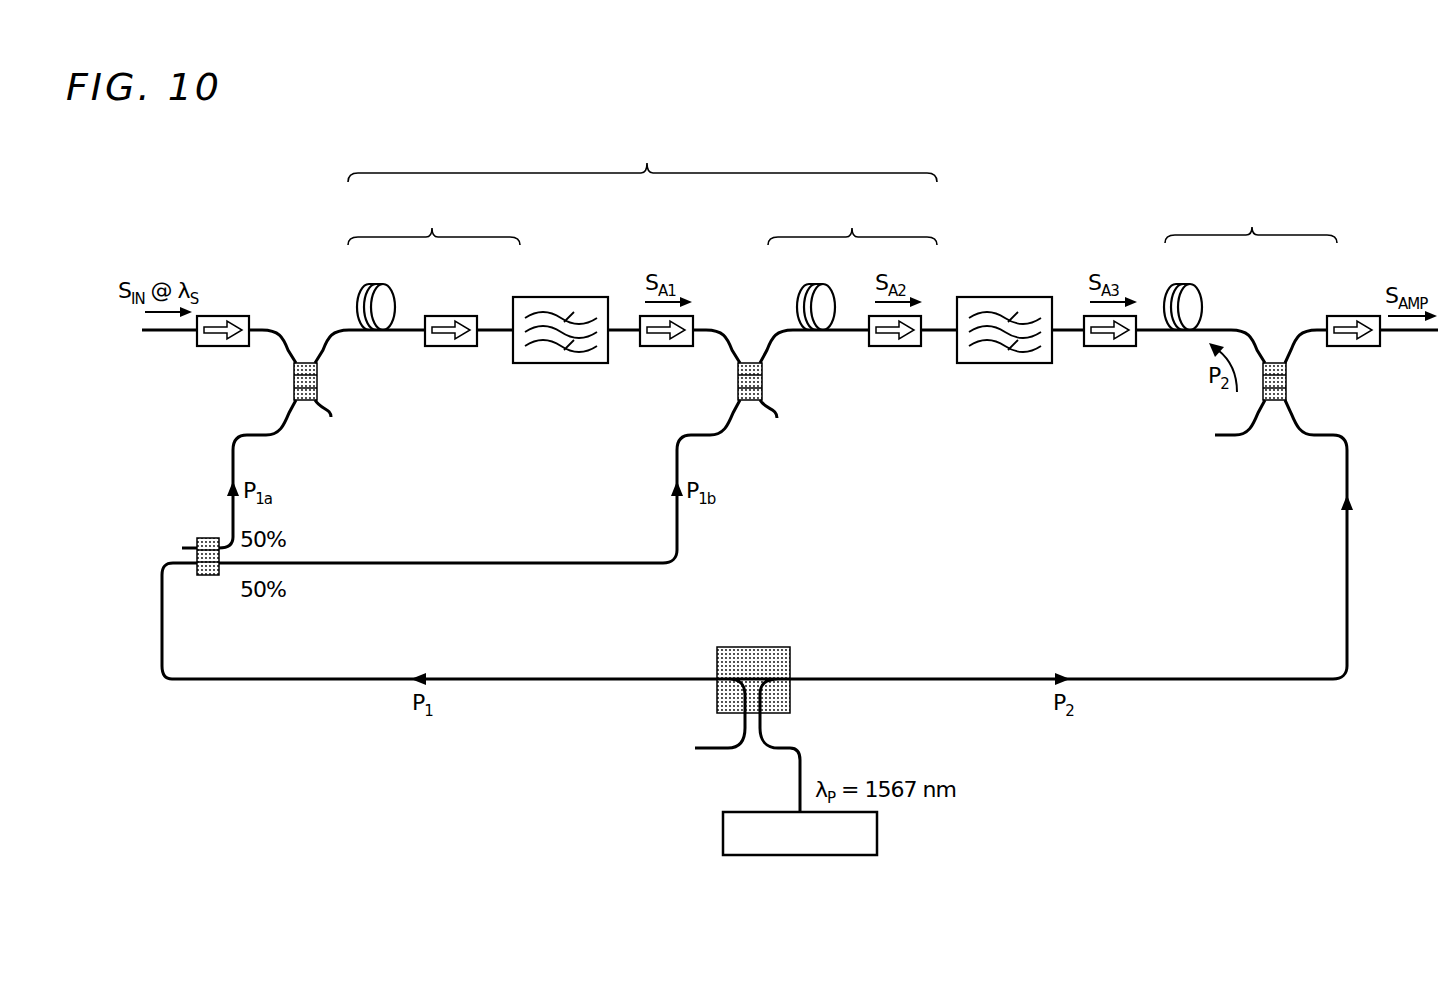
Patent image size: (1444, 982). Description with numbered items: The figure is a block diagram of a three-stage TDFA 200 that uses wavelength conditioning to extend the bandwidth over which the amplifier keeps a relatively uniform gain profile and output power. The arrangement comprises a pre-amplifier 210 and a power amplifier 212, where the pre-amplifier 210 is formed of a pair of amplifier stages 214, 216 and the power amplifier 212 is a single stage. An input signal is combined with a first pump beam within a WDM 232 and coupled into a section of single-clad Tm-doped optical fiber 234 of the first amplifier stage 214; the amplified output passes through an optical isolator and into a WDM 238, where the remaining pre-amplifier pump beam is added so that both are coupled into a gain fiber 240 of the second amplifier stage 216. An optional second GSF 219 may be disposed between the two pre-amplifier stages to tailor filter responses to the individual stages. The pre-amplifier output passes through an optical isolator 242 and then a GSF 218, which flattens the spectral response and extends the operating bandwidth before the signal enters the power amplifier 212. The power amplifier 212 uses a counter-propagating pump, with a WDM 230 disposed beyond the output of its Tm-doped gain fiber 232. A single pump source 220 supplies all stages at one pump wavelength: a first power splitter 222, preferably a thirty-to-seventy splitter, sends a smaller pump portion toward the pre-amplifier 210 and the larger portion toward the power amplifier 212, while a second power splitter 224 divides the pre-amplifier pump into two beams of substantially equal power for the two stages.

The three-stage TDFA 200 is at (200, 162).
The pre-amplifier 210 is at (665, 153).
The power amplifier 212 is at (1251, 219).
The first amplifier stage 214 is at (434, 221).
The second amplifier stage 216 is at (852, 221).
The gain shaping filter 218 is at (1005, 297).
The second gain shaping filter 219 is at (565, 297).
The pump source 220 is at (722, 834).
The first power splitter 222 is at (791, 661).
The second power splitter 224 is at (205, 538).
The WDM 230 is at (1287, 378).
The single-clad Tm-doped optical fiber / WDM 232 is at (1205, 302).
The single-clad Tm-doped optical fiber 234 is at (362, 300).
The WDM 238 is at (738, 378).
The single-clad Tm-doped optical gain fiber 240 is at (803, 300).
The optical isolator 242 is at (893, 347).